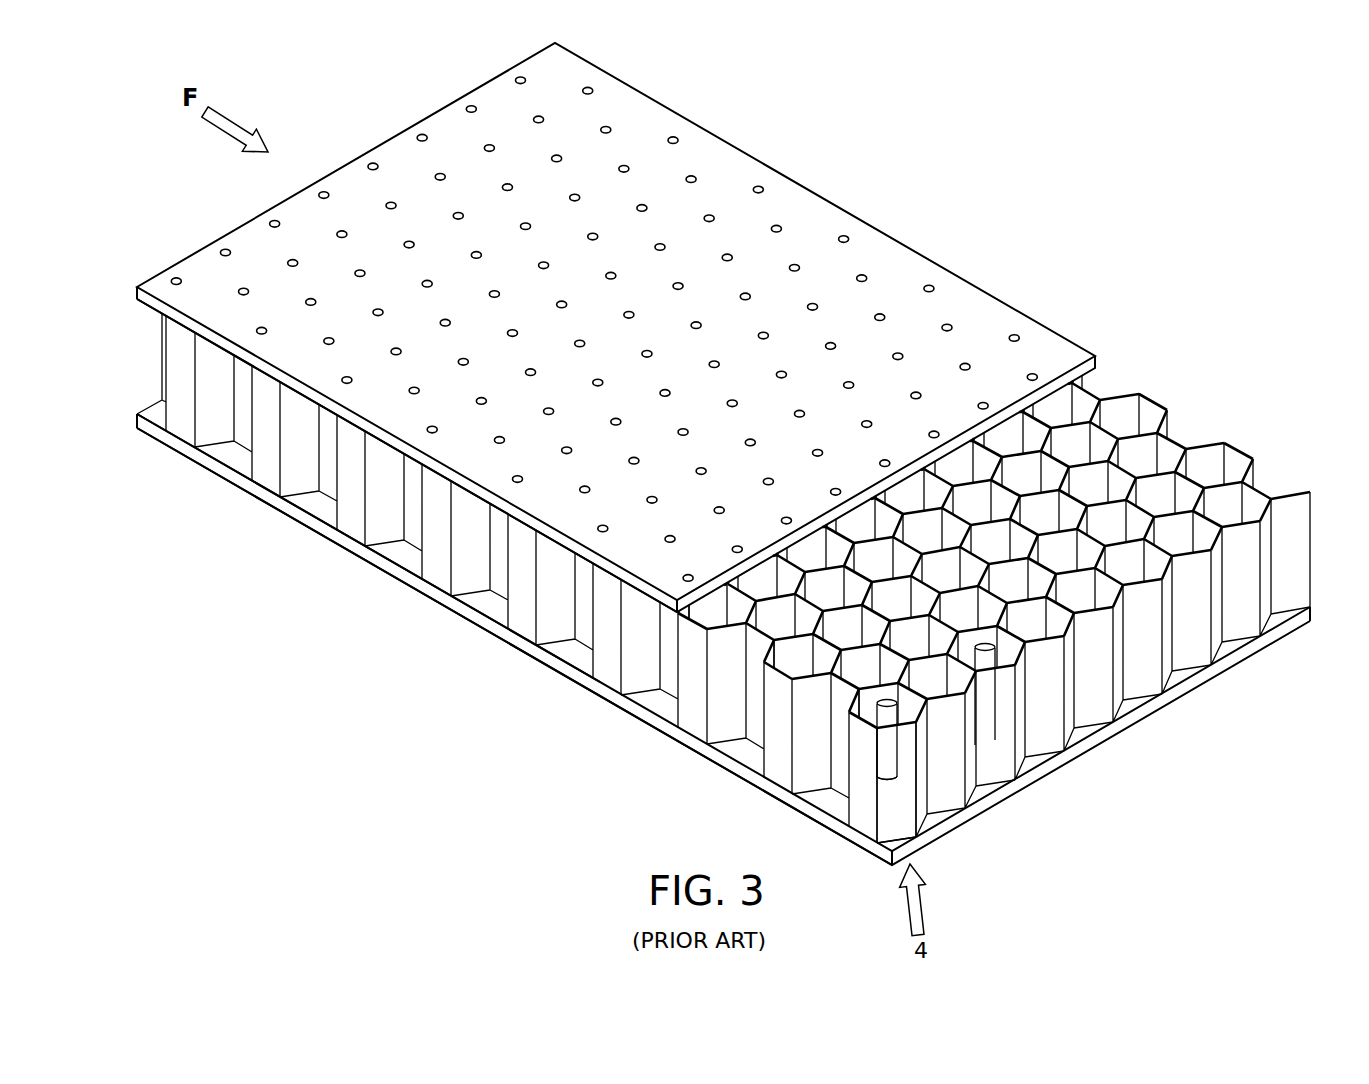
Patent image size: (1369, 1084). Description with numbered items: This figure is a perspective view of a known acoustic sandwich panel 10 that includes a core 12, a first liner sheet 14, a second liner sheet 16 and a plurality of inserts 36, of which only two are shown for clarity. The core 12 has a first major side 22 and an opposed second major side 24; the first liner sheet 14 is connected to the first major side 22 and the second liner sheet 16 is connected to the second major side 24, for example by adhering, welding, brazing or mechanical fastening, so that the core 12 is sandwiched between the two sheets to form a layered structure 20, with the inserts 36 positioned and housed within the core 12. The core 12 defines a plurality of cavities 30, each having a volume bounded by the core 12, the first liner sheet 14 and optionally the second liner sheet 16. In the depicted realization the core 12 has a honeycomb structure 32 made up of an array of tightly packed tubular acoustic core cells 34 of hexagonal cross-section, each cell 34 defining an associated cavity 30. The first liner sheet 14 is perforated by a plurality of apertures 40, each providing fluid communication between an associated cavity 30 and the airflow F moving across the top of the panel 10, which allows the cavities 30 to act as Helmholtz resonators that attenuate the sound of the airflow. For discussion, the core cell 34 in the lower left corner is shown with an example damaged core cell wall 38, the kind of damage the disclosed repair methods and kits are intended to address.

The acoustic sandwich panel 10 is at (1046, 153).
The core 12 is at (170, 355).
The first liner sheet 14 is at (345, 165).
The second liner sheet 16 is at (212, 470).
The layered structure 20 is at (454, 682).
The first major side 22 is at (136, 314).
The second major side 24 is at (136, 390).
The cavity 30 is at (1142, 398).
The honeycomb structure 32 is at (1204, 408).
The acoustic core cell 34 is at (1302, 552).
The insert 36 is at (992, 652).
The damaged core cell wall 38 is at (897, 774).
The aperture 40 is at (758, 186).